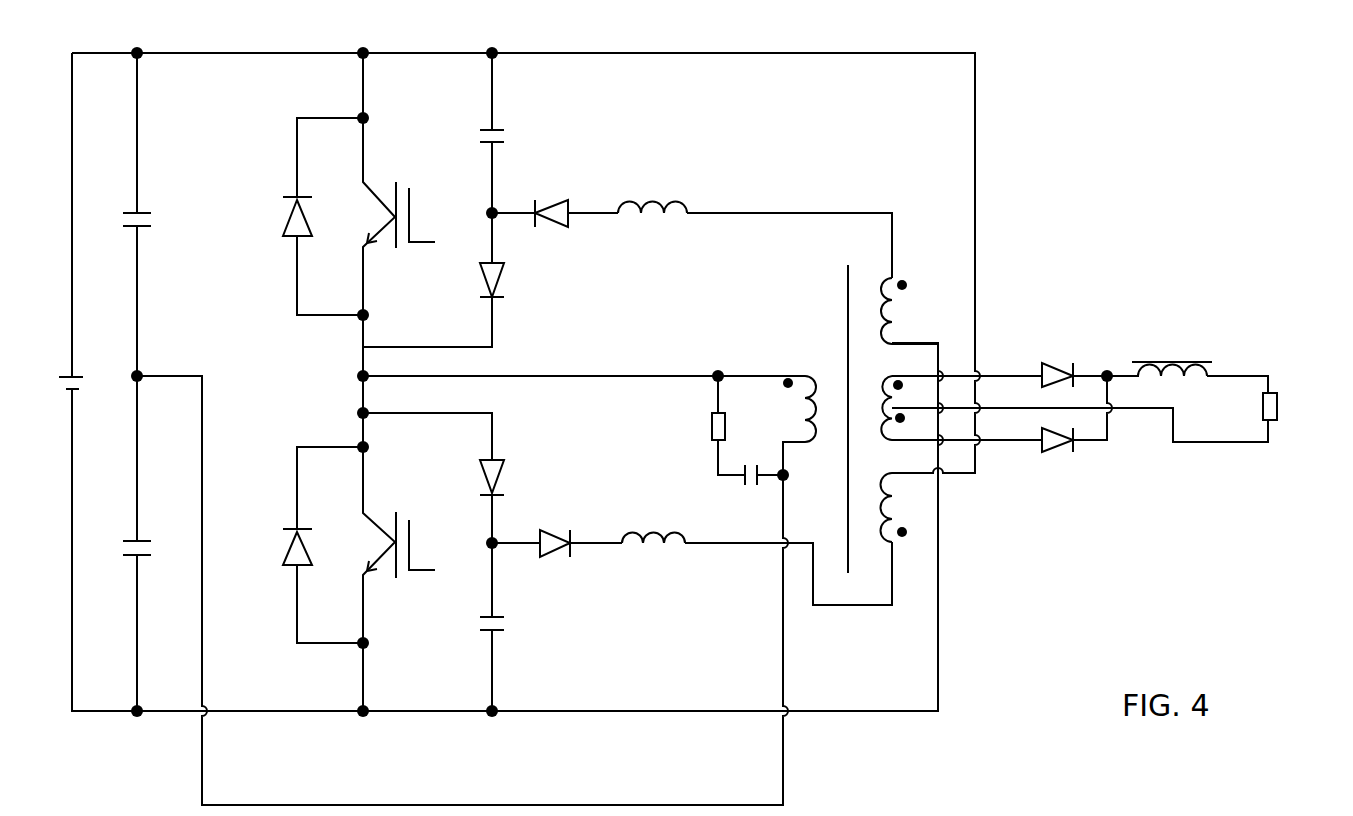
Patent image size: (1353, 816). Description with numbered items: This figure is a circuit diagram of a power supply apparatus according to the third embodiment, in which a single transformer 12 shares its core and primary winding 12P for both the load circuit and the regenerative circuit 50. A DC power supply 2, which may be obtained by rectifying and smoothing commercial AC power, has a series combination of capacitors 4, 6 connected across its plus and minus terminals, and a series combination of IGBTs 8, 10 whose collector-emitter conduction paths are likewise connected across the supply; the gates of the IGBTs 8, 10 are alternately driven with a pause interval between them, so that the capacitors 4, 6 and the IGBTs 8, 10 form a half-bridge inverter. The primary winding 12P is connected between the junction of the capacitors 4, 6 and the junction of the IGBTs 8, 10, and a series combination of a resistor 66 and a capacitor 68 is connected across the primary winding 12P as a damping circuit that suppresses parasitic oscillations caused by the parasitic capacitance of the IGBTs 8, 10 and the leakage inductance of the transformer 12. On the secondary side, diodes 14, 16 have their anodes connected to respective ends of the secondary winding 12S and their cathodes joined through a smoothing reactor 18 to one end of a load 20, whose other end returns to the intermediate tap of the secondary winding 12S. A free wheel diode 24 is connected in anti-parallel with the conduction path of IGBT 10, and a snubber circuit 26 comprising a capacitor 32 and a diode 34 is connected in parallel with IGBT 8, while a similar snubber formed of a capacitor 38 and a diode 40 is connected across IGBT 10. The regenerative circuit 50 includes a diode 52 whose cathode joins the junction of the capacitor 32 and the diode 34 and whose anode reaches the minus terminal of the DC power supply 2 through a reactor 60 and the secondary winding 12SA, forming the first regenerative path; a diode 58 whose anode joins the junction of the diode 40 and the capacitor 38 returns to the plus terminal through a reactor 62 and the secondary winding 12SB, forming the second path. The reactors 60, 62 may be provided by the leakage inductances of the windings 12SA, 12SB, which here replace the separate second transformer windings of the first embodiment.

The DC power supply 2 is at (74, 377).
The capacitor 4 is at (136, 214).
The capacitor 6 is at (136, 545).
The IGBT 8 is at (394, 215).
The IGBT 10 is at (391, 545).
The transformer 12 is at (862, 256).
The primary winding 12P is at (808, 376).
The secondary winding 12S is at (893, 378).
The secondary winding 12SA is at (892, 316).
The secondary winding 12SB is at (893, 496).
The diode 14 is at (1050, 368).
The diode 16 is at (1048, 449).
The smoothing reactor 18 is at (1166, 368).
The load 20 is at (1278, 402).
The free wheel diode 24 is at (302, 549).
The snubber circuit 26 is at (302, 216).
The capacitor 32 is at (498, 135).
The diode 34 is at (500, 263).
The capacitor 38 is at (500, 618).
The diode 40 is at (500, 468).
The regenerative circuit 50 is at (755, 306).
The diode 52 is at (562, 206).
The diode 58 is at (552, 536).
The reactor 60 is at (654, 208).
The reactor 62 is at (660, 544).
The resistor 66 is at (712, 426).
The capacitor 68 is at (750, 464).